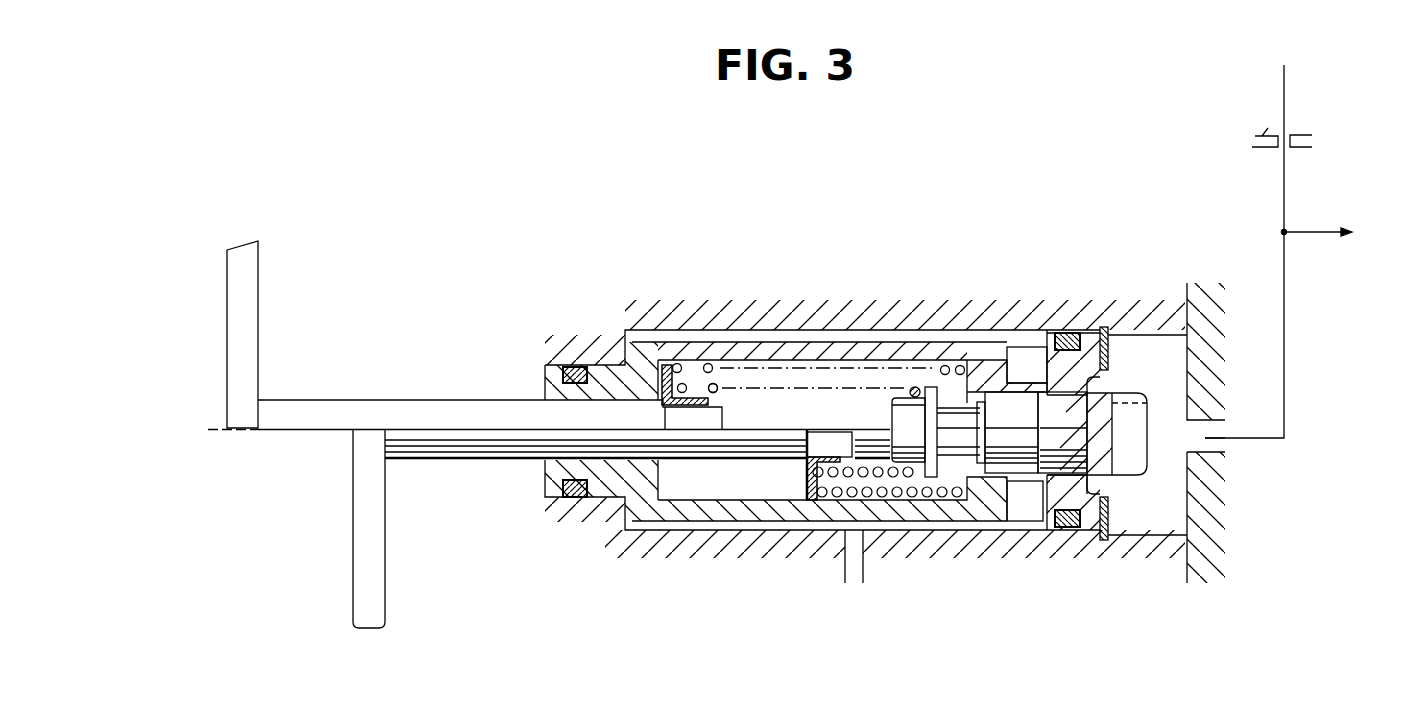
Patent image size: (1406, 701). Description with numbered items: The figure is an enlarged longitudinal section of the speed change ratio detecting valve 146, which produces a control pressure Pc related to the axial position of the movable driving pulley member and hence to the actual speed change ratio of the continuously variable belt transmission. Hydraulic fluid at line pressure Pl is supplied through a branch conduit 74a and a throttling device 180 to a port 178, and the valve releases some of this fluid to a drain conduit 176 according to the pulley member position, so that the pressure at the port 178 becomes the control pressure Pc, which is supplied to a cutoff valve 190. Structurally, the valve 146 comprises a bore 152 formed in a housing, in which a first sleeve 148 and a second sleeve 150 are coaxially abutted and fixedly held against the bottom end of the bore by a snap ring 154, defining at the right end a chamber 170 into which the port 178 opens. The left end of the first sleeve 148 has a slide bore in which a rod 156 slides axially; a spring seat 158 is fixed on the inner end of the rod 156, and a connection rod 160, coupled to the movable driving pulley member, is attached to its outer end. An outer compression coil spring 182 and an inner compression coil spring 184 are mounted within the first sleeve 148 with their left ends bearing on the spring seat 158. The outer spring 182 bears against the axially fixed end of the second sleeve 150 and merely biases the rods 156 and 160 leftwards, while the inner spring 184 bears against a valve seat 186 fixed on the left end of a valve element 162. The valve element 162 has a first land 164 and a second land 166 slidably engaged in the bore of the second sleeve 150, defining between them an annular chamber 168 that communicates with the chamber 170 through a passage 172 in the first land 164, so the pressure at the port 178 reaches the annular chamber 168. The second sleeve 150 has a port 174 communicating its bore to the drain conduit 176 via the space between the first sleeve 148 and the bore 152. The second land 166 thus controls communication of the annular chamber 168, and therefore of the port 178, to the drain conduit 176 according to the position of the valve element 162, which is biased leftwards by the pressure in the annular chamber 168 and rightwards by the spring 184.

The speed change ratio detecting valve 146 is at (947, 279).
The first sleeve 148 is at (767, 348).
The second sleeve 150 is at (1090, 340).
The bore 152 is at (827, 336).
The snap ring 154 is at (1108, 520).
The rod 156 is at (463, 445).
The spring seat 158 is at (662, 385).
The connection rod 160 is at (250, 308).
The valve element 162 is at (948, 447).
The first land 164 is at (1148, 403).
The second land 166 is at (1018, 400).
The annular chamber 168 is at (1073, 468).
The chamber 170 is at (1172, 483).
The passage 172 is at (1147, 405).
The port 174 is at (1020, 495).
The drain conduit 176 is at (852, 578).
The port 178 is at (1221, 428).
The throttling device 180 is at (1262, 134).
The outer compression coil spring 182 is at (708, 363).
The inner compression coil spring 184 is at (718, 392).
The valve seat 186 is at (928, 480).
The cutoff valve 190 is at (1338, 234).
The branch conduit 74a is at (1284, 173).
The line pressure Pl is at (1284, 98).
The control pressure Pc is at (1284, 308).